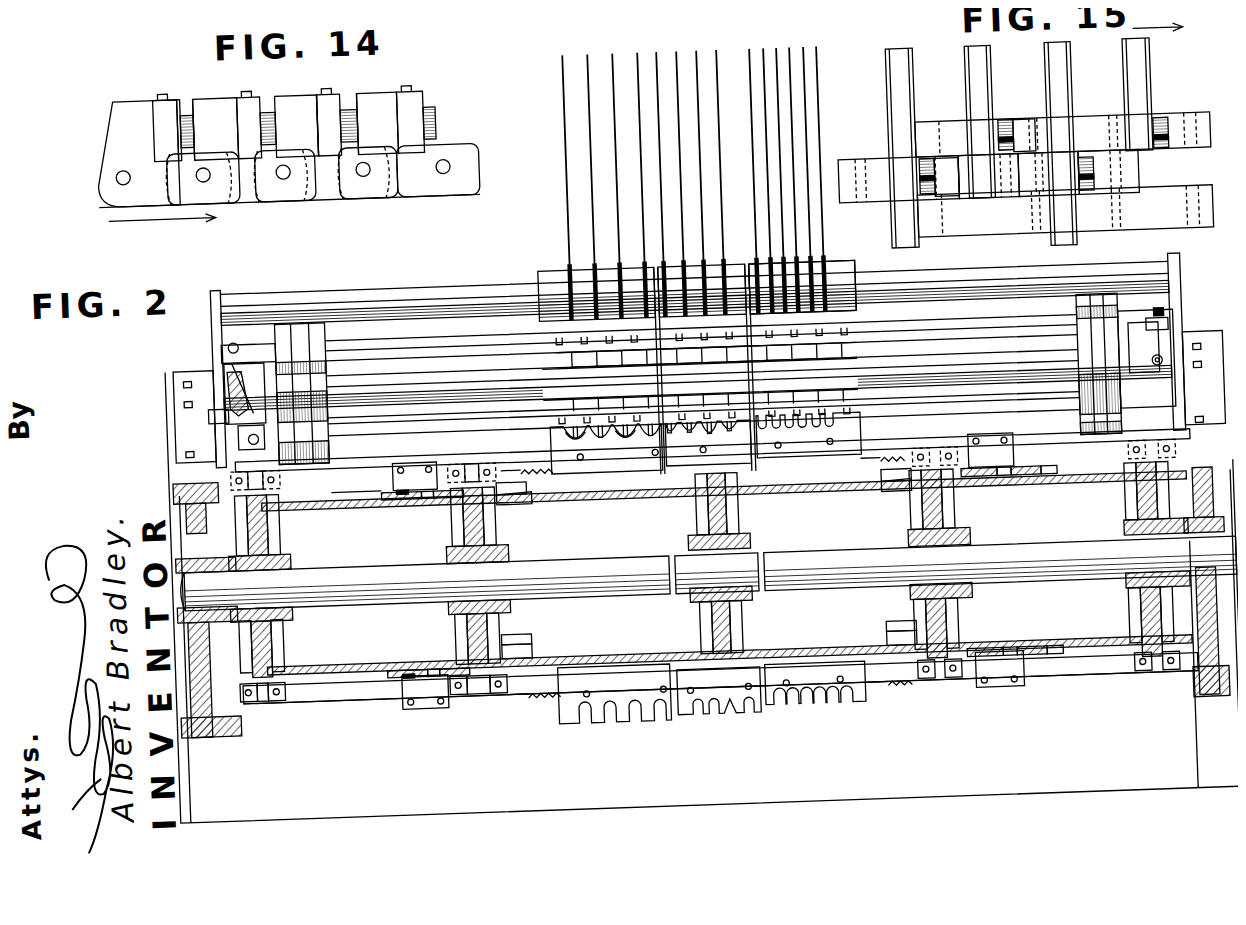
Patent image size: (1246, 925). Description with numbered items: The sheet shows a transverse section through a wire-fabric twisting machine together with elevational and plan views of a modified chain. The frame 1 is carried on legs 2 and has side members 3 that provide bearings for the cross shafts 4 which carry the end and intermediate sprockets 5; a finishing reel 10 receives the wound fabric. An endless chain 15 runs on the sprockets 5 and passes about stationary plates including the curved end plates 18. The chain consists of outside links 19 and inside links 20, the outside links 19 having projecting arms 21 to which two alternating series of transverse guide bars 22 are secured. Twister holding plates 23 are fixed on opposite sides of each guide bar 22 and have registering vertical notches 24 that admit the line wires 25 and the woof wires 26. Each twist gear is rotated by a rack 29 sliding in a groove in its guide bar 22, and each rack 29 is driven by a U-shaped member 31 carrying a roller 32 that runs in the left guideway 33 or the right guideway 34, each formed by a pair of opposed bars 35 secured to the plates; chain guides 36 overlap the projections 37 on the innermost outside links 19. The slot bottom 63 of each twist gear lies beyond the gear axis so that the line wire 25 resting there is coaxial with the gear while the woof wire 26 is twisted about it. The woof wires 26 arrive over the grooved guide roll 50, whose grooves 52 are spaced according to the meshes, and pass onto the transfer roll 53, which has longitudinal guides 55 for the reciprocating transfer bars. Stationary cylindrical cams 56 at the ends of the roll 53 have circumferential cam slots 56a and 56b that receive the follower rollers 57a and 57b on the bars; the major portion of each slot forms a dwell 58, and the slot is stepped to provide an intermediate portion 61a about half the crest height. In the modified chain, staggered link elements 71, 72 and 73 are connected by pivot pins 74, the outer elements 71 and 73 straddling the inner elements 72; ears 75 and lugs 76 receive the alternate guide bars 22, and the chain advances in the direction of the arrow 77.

In FIG. 2, the frame 1 is at (166, 396).
In FIG. 2, the legs 2 is at (205, 778).
In FIG. 2, the side members 3 is at (172, 482).
In FIG. 2, the shafts 4 is at (828, 566).
In FIG. 2, the sprockets 5 is at (287, 557).
In FIG. 2, the finishing reel 10 is at (1050, 462).
In FIG. 2, the endless chain 15 is at (330, 692).
In FIG. 2, the curved end plates 18 is at (349, 496).
In FIG. 2, the outside links 19 is at (233, 500).
In FIG. 2, the inside links 20 is at (256, 460).
In FIG. 2, the projecting arms 21 is at (238, 458).
In FIG. 14, the guide bars 22 is at (440, 90).
In FIG. 15, the guide bars 22 is at (978, 66).
In FIG. 2, the guide bars 22 is at (1072, 688).
In FIG. 2, the twister holding plates 23 is at (806, 462).
In FIG. 2, the vertical notches 24 is at (730, 688).
In FIG. 2, the line wires 25 is at (579, 452).
In FIG. 2, the woof wires 26 is at (574, 96).
In FIG. 2, the rack 29 is at (714, 573).
In FIG. 2, the U-shaped member 31 is at (708, 571).
In FIG. 2, the roller 32 is at (707, 572).
In FIG. 2, the left guideway 33 is at (1041, 559).
In FIG. 2, the right guideway 34 is at (392, 584).
In FIG. 2, the bars 35 is at (380, 484).
In FIG. 2, the chain guides 36 is at (525, 486).
In FIG. 2, the projections 37 is at (518, 496).
In FIG. 2, the guide roll 50 is at (548, 270).
In FIG. 2, the grooves 52 is at (840, 285).
In FIG. 2, the transfer roll 53 is at (262, 331).
In FIG. 2, the longitudinal guides 55 is at (329, 336).
In FIG. 2, the gear 56 is at (310, 428).
In FIG. 2, the cam slot 56a is at (236, 356).
In FIG. 2, the cam slot 56b is at (1170, 326).
In FIG. 2, the follower roller 57a is at (211, 418).
In FIG. 2, the follower roller 57b is at (1172, 340).
In FIG. 2, the lever 58 is at (252, 380).
In FIG. 2, the intermediate portion 61a is at (1144, 359).
In FIG. 2, the slot bottom 63 is at (625, 446).
In FIG. 14, the outer link elements 71 is at (232, 90).
In FIG. 15, the outer link elements 71 is at (1042, 132).
In FIG. 14, the inner link elements 72 is at (170, 92).
In FIG. 15, the inner link elements 72 is at (968, 198).
In FIG. 14, the outer link elements 73 is at (300, 182).
In FIG. 15, the outer link elements 73 is at (1065, 211).
In FIG. 14, the pivot pins 74 is at (215, 166).
In FIG. 15, the pivot pins 74 is at (1015, 133).
In FIG. 14, the projecting ears 75 is at (296, 126).
In FIG. 15, the projecting ears 75 is at (945, 132).
In FIG. 14, the projecting lugs 76 is at (208, 151).
In FIG. 15, the projecting lugs 76 is at (880, 178).
In FIG. 14, the arrow 77 is at (135, 206).
In FIG. 15, the arrow 77 is at (1172, 44).